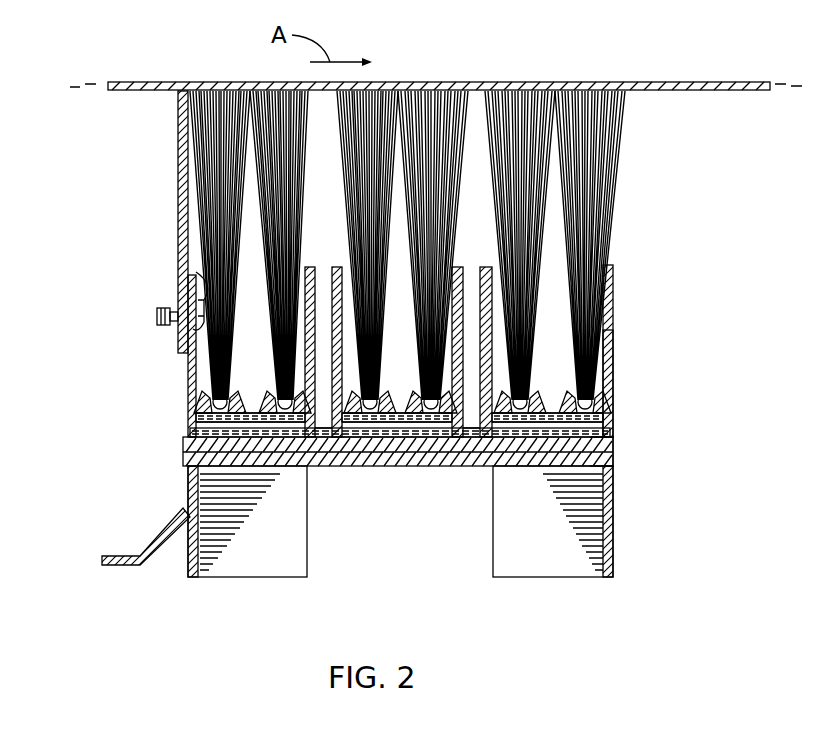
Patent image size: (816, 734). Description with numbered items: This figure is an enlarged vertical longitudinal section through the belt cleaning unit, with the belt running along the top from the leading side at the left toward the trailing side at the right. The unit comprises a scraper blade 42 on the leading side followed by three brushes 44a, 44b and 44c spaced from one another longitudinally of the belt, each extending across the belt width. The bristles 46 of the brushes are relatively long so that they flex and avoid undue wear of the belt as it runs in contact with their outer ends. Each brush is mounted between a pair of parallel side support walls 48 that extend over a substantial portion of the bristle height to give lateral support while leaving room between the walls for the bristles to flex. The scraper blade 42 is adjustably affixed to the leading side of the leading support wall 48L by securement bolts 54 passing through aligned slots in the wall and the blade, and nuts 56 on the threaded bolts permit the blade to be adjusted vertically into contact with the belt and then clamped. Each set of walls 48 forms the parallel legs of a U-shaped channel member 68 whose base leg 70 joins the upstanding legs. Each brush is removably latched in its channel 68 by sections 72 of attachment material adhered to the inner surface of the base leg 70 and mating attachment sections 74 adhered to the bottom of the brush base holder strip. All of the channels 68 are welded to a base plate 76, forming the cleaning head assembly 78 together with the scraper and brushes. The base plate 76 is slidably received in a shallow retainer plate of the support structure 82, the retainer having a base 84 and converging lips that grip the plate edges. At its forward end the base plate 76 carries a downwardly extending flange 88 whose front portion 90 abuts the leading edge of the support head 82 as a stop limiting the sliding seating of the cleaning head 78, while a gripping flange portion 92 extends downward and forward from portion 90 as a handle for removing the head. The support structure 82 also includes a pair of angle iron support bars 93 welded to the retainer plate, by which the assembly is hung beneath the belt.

The scraper blade 42 is at (178, 157).
The bristles 46 is at (612, 195).
The securement bolts 54 is at (193, 273).
The nuts 56 is at (168, 305).
The leading support wall 48L is at (186, 382).
The brush 44a is at (178, 412).
The brush 44b is at (432, 425).
The brush 44c is at (613, 401).
The U-shaped channel member 68 is at (620, 296).
The cleaning head assembly 78 is at (627, 342).
The side support walls 48 is at (321, 443).
The mating attachment sections 74 is at (612, 415).
The base plate 76 is at (345, 442).
The sections of attachment material 72 is at (450, 509).
The base leg 70 is at (386, 438).
The base 84 is at (472, 454).
The support structure 82 is at (628, 465).
The downwardly extending flange 88 is at (178, 472).
The front portion 90 is at (190, 493).
The angle iron support bars 93 is at (190, 565).
The gripping flange portion 92 is at (135, 547).